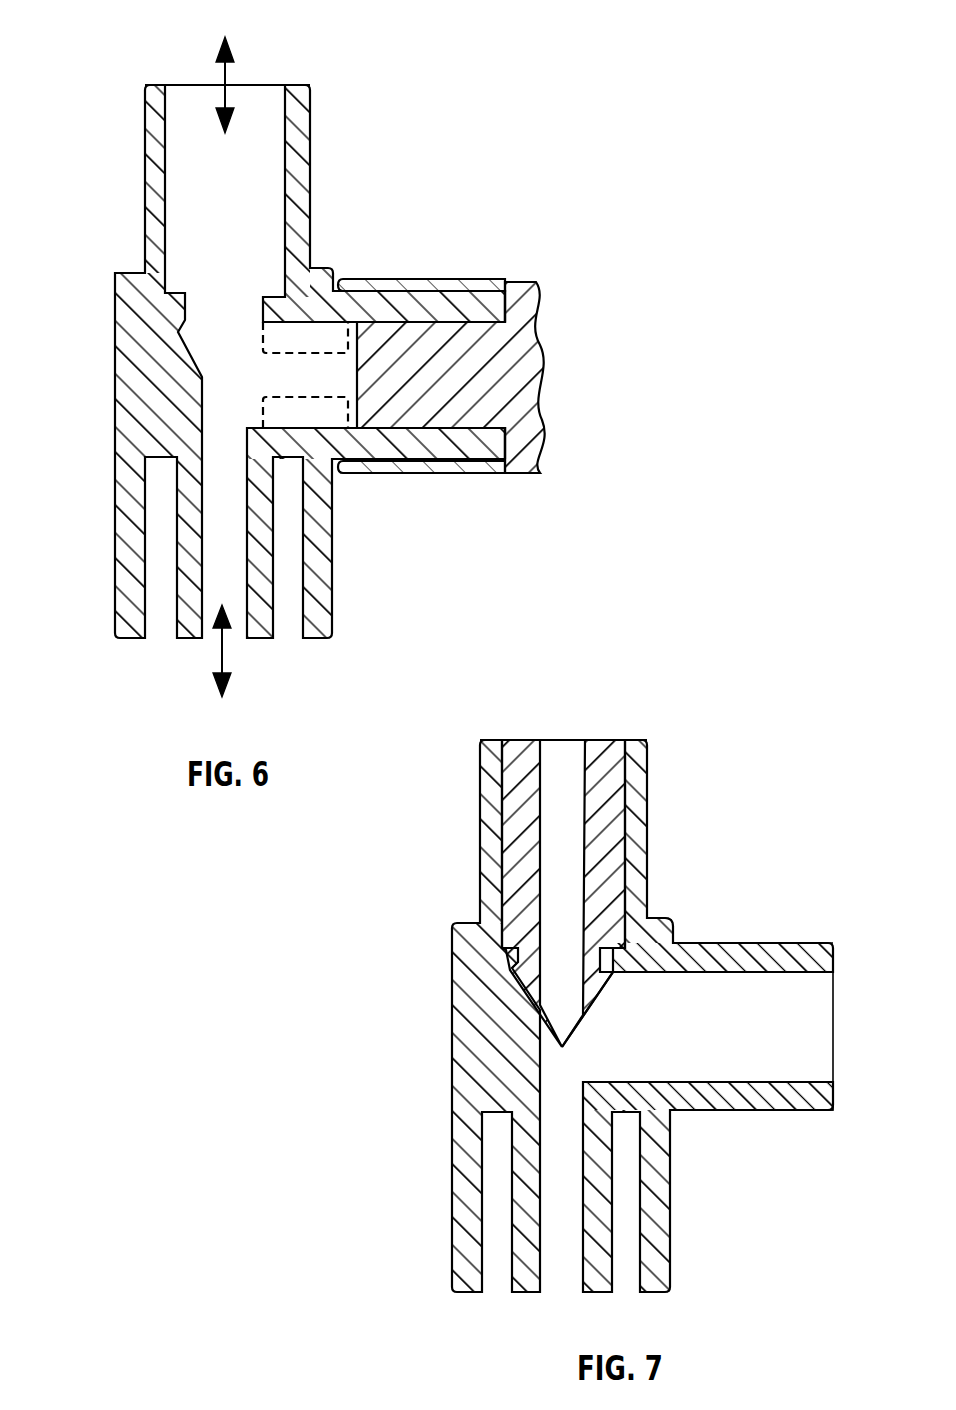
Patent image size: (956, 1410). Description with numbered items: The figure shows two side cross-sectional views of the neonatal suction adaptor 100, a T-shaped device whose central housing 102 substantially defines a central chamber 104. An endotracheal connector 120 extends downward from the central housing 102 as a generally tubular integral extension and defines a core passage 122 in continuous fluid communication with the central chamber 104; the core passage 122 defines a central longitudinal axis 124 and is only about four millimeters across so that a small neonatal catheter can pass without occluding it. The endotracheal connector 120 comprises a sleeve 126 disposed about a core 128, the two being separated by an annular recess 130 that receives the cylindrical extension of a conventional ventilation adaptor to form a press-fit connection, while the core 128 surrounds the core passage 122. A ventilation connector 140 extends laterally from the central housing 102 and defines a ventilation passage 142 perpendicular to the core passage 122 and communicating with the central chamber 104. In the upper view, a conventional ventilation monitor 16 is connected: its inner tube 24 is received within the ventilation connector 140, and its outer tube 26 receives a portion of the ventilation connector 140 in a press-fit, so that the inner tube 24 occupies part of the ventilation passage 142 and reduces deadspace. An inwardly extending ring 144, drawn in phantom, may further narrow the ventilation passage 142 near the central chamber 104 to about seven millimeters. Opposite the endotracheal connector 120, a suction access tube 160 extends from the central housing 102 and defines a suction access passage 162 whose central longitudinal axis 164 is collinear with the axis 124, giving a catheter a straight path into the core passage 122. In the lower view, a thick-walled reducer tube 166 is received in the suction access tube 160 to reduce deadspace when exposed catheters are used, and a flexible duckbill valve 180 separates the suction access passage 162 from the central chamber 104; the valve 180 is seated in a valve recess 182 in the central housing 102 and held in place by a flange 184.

In FIG. 6, the ventilation monitor 16 is at (480, 407).
In FIG. 6, the inner tube 24 is at (405, 380).
In FIG. 6, the outer tube 26 is at (417, 283).
In FIG. 6, the neonatal suction adaptor 100 is at (306, 375).
In FIG. 7, the neonatal suction adaptor 100 is at (619, 1028).
In FIG. 6, the central housing 102 is at (323, 270).
In FIG. 7, the central housing 102 is at (650, 945).
In FIG. 6, the central chamber 104 is at (242, 384).
In FIG. 7, the central chamber 104 is at (552, 1042).
In FIG. 6, the endotracheal connector 120 is at (330, 550).
In FIG. 7, the endotracheal connector 120 is at (660, 1150).
In FIG. 6, the core passage 122 is at (236, 535).
In FIG. 7, the core passage 122 is at (579, 827).
In FIG. 6, the central longitudinal axis 124 is at (227, 655).
In FIG. 6, the sleeve 126 is at (135, 625).
In FIG. 7, the sleeve 126 is at (460, 1280).
In FIG. 6, the core 128 is at (185, 630).
In FIG. 7, the core 128 is at (520, 1280).
In FIG. 6, the annular recess 130 is at (150, 632).
In FIG. 6, the ventilation connector 140 is at (470, 298).
In FIG. 7, the ventilation connector 140 is at (770, 1090).
In FIG. 6, the ventilation passage 142 is at (319, 384).
In FIG. 7, the ventilation passage 142 is at (774, 1022).
In FIG. 6, the inwardly extending ring 144 is at (282, 332).
In FIG. 6, the suction access tube 160 is at (303, 150).
In FIG. 7, the suction access tube 160 is at (640, 812).
In FIG. 6, the suction access passage 162 is at (239, 204).
In FIG. 6, the central longitudinal axis 164 is at (225, 74).
In FIG. 7, the reducer tube 166 is at (523, 772).
In FIG. 7, the valve 180 is at (593, 983).
In FIG. 7, the valve recess 182 is at (520, 915).
In FIG. 7, the flange 184 is at (522, 965).